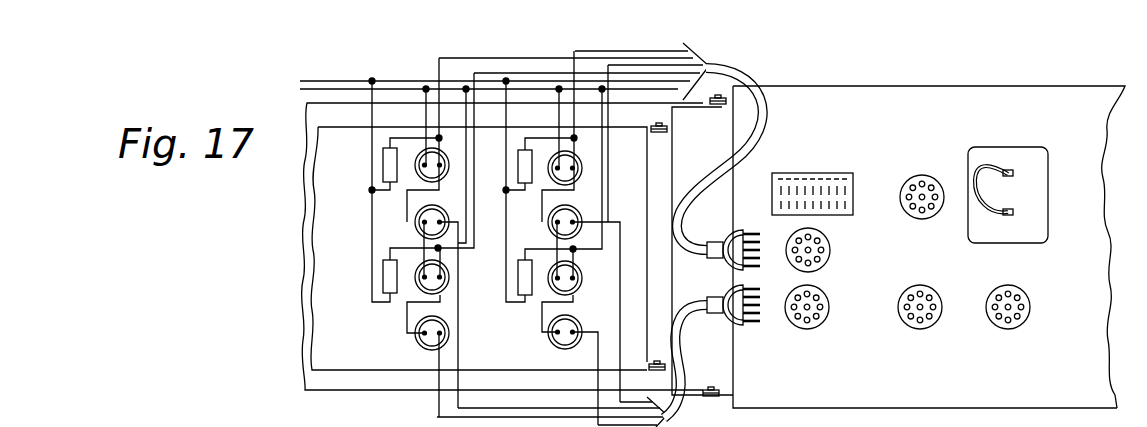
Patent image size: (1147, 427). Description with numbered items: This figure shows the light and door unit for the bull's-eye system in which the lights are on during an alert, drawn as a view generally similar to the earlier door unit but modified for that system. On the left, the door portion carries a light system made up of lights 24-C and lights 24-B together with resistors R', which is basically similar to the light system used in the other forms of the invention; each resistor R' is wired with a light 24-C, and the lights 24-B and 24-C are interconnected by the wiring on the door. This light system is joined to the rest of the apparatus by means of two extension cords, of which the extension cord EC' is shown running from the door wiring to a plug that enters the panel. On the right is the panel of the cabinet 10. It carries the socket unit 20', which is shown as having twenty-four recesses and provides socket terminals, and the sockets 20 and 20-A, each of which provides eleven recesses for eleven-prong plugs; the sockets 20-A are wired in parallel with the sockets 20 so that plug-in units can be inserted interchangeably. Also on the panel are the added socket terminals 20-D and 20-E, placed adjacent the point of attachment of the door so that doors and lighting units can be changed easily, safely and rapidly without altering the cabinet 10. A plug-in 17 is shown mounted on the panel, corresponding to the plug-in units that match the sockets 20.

The cabinet 10 is at (973, 84).
The plug-in unit 17 is at (1020, 243).
The socket 20 is at (1018, 318).
The socket for flasher relay plug-in 20-A is at (918, 349).
The socket terminal 20-D is at (815, 271).
The socket terminal 20-E is at (814, 328).
The socket unit 20' is at (821, 181).
The light 24-B is at (550, 340).
The light 24-C is at (592, 266).
The extension cord EC' is at (740, 169).
The resistor R' is at (467, 218).